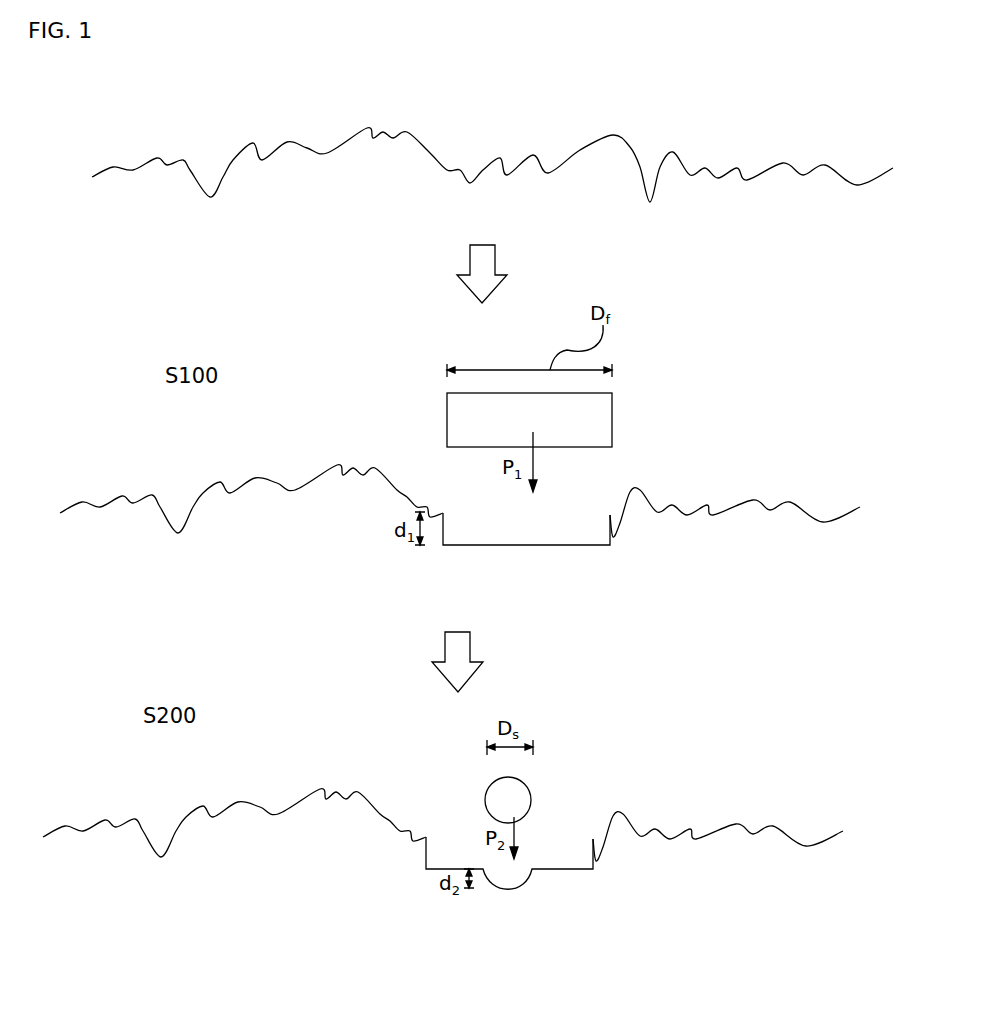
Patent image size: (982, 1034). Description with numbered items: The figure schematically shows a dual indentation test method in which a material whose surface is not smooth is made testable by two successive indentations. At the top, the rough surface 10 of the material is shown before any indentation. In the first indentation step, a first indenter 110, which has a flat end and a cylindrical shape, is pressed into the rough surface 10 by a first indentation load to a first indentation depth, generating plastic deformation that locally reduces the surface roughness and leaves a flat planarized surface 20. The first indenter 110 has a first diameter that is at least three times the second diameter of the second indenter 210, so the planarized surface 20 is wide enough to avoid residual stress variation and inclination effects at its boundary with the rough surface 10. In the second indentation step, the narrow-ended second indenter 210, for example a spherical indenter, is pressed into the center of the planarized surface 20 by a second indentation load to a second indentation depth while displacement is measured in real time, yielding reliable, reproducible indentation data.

The rough surface 10 is at (157, 158).
The planarized surface 20 is at (563, 546).
The first indenter 110 is at (463, 412).
The second indenter 210 is at (520, 793).